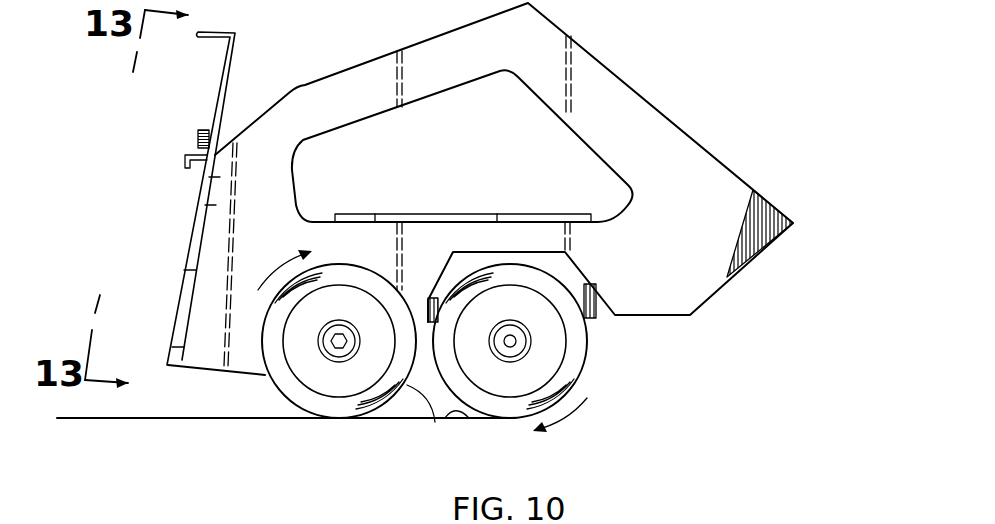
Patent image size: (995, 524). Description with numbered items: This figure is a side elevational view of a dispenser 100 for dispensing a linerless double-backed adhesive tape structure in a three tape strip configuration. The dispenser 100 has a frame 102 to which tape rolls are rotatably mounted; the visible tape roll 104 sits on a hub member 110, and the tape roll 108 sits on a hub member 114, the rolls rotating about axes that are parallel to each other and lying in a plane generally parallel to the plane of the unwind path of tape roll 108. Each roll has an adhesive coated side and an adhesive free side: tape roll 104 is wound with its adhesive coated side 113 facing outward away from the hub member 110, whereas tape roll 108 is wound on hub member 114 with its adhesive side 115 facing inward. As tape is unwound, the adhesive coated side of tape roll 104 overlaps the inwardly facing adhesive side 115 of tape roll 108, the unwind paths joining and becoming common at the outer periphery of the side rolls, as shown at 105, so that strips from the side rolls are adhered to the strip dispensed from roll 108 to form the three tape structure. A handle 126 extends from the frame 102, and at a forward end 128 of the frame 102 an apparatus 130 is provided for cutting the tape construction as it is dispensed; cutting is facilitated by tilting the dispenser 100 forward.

The dispenser 100 is at (713, 67).
The frame 102 is at (742, 172).
The tape roll 104 is at (330, 418).
The outer periphery of tape rolls 105 is at (357, 420).
The tape roll 108 is at (587, 363).
The hub member 110 is at (325, 357).
The adhesive coated side 113 is at (437, 421).
The hub member 114 is at (528, 340).
The adhesive side 115 is at (463, 417).
The handle 126 is at (600, 78).
The forward end 128 is at (222, 145).
The cutting apparatus 130 is at (192, 235).